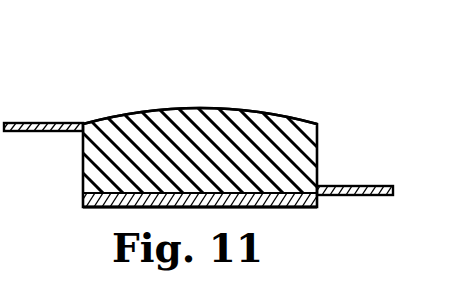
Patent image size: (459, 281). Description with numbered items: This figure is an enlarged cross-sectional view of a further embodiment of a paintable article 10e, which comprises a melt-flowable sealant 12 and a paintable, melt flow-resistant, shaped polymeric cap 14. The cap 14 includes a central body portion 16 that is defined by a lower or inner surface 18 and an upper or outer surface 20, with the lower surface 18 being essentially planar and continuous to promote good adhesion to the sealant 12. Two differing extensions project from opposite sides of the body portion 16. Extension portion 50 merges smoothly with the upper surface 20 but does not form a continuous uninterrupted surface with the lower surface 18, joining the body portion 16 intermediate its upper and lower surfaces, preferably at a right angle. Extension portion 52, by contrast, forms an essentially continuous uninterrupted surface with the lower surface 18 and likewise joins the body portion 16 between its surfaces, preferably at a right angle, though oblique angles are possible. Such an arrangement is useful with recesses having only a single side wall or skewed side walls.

The paintable article 10e is at (178, 74).
The cap 14 is at (230, 98).
The upper surface 20 is at (263, 110).
The central body portion 16 is at (283, 153).
The sealant 12 is at (288, 198).
The lower surface 18 is at (112, 195).
The extension portion 50 is at (47, 123).
The extension portion 52 is at (360, 187).